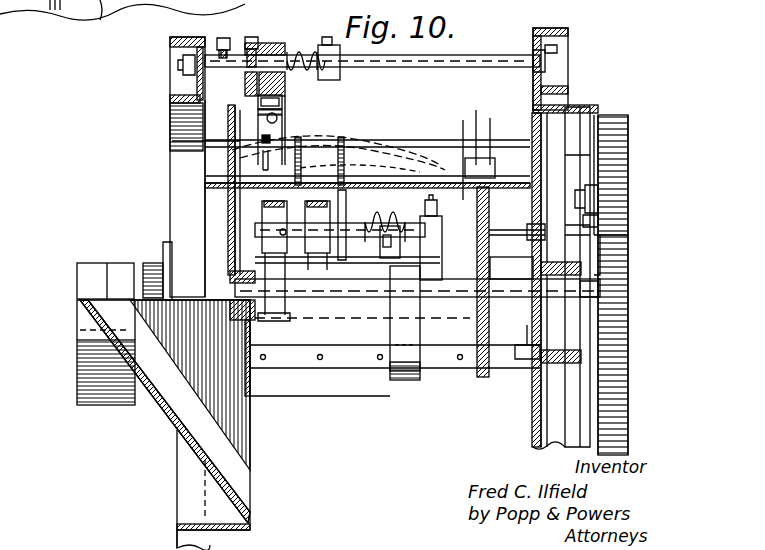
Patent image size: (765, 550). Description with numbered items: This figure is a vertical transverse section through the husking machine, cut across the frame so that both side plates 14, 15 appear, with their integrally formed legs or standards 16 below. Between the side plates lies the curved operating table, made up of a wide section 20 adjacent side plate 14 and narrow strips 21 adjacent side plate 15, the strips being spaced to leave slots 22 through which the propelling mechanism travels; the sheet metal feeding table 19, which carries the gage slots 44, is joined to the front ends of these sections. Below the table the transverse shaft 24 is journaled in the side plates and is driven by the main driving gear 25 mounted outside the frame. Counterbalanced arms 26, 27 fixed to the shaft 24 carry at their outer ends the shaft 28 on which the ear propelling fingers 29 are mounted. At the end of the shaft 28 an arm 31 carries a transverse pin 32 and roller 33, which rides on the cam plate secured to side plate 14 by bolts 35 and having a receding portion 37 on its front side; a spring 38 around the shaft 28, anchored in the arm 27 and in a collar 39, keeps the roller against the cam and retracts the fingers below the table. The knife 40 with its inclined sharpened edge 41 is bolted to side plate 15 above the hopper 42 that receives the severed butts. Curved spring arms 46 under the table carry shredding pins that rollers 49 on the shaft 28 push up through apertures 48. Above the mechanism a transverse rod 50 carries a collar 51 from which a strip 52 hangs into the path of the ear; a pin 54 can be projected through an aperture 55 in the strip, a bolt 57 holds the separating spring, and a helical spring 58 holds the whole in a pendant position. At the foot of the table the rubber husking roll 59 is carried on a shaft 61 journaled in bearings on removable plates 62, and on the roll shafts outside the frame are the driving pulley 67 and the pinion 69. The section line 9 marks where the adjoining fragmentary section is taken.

The section line 9 is at (428, 197).
The side plate 14 is at (534, 436).
The side plate 15 is at (205, 226).
The legs or standards 16 is at (549, 459).
The feeding table 19 is at (600, 218).
The wide section of operating table 20 is at (489, 160).
The narrow strips 21 is at (322, 150).
The slots 22 is at (228, 178).
The transverse shaft 24 is at (575, 285).
The main driving gear 25 is at (615, 118).
The arm 26 is at (262, 333).
The arm 27 is at (424, 368).
The shaft 28 is at (368, 236).
The ear propelling fingers 29 is at (310, 140).
The arm 31 is at (475, 160).
The transverse pin 32 is at (462, 190).
The roller 33 is at (478, 180).
The bolts 35 is at (510, 232).
The receding portion of cam plate 37 is at (484, 370).
The spring 38 is at (428, 208).
The collar 39 is at (386, 258).
The knife 40 is at (172, 105).
The sharpened edge 41 is at (320, 258).
The hopper 42 is at (112, 312).
The slots 44 is at (585, 200).
The curved spring arms 46 is at (294, 261).
The aperture 48 is at (580, 115).
The roller 49 is at (394, 147).
The transverse rod 50 is at (476, 56).
The collar 51 is at (268, 52).
The strip 52 is at (280, 130).
The pin 54 is at (172, 144).
The aperture 55 is at (267, 132).
The bolt 57 is at (264, 134).
The helical spring 58 is at (302, 52).
The husking roll 59 is at (511, 268).
The shaft 61 is at (626, 370).
The plates 62 is at (163, 246).
The driving pulley 67 is at (78, 376).
The pinion 69 is at (143, 282).